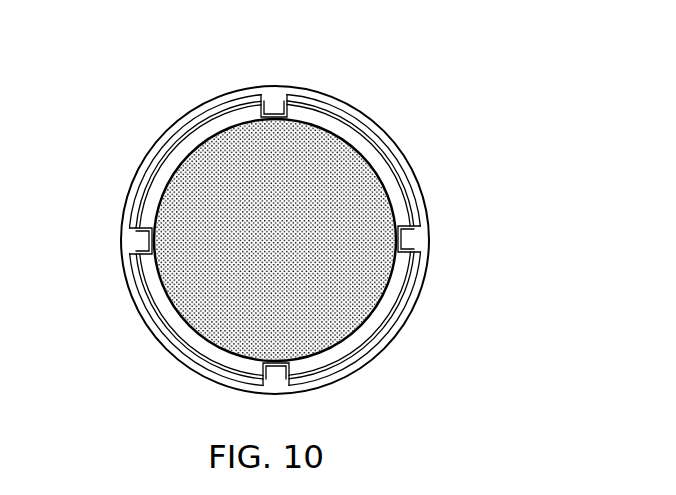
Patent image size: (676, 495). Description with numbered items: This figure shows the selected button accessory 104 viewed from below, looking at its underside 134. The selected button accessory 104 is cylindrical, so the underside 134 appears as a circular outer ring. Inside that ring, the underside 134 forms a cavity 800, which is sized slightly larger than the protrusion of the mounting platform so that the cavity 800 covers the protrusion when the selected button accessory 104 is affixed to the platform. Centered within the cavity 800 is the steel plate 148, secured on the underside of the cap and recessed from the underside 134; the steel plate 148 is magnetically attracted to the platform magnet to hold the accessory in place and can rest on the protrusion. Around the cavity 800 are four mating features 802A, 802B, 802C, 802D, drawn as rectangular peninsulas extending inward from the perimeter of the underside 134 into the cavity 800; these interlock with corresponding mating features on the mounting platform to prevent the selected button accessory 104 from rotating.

The selected button accessory 104 is at (467, 78).
The underside 134 is at (155, 152).
The steel plate 148 is at (332, 169).
The cavity 800 is at (365, 320).
The mating feature 802A is at (278, 100).
The mating feature 802B is at (414, 240).
The mating feature 802C is at (272, 375).
The mating feature 802D is at (134, 238).